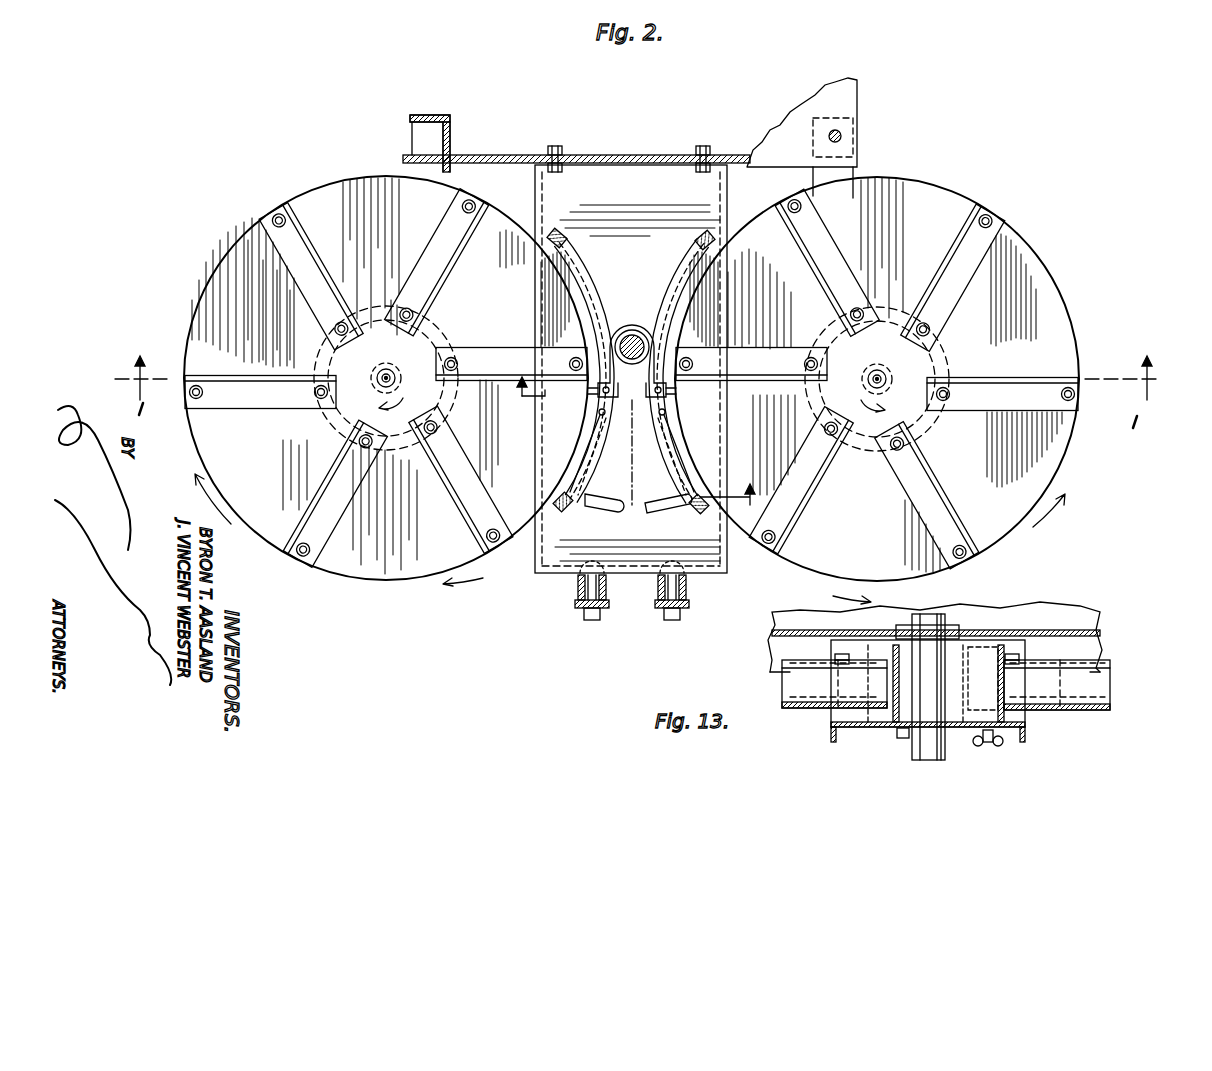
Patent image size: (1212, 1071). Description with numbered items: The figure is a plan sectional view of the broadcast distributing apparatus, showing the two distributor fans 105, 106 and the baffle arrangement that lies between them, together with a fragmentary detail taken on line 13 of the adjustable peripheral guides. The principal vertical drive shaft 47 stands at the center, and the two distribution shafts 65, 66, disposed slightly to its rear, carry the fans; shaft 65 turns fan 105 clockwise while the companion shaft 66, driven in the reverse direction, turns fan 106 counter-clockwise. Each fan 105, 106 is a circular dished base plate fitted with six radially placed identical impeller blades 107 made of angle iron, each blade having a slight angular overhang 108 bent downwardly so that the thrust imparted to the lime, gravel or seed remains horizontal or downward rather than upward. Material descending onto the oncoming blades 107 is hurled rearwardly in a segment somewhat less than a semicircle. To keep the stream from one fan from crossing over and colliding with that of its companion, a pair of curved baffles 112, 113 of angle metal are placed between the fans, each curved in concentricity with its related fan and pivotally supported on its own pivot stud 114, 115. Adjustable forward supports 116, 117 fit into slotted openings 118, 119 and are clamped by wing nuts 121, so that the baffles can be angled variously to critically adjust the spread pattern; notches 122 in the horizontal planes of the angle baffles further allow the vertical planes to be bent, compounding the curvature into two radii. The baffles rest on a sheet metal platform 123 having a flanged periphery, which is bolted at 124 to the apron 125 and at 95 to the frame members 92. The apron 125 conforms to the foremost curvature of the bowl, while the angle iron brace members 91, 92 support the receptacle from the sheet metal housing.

In FIG. 2, the section line 13— 13 is at (632, 452).
In FIG. 2, the principal vertical drive shaft 47 is at (634, 330).
In FIG. 13, the principal vertical drive shaft 47 is at (947, 753).
In FIG. 2, the distribution shaft 65 is at (384, 368).
In FIG. 2, the companion distribution shaft 66 is at (876, 369).
In FIG. 2, the angle iron brace member 91 is at (432, 117).
In FIG. 2, the angle iron brace member 92 is at (580, 604).
In FIG. 2, the bolt 95 is at (594, 622).
In FIG. 2, the distributor fan 105 is at (234, 252).
In FIG. 2, the distributor fan 106 is at (1038, 254).
In FIG. 2, the impeller blade 107 is at (326, 249).
In FIG. 13, the impeller blade 107 is at (790, 693).
In FIG. 13, the angular overhang 108 is at (790, 658).
In FIG. 2, the curved baffle 112 is at (596, 290).
In FIG. 2, the curved baffle 113 is at (684, 276).
In FIG. 2, the pivot stud 114 is at (581, 230).
In FIG. 2, the pivot stud 115 is at (699, 241).
In FIG. 2, the adjustable forward support 116 is at (590, 392).
In FIG. 2, the adjustable forward support 117 is at (560, 499).
In FIG. 2, the slotted opening 118 is at (611, 390).
In FIG. 2, the slotted opening 119 is at (608, 507).
In FIG. 13, the wing nut 121 is at (1003, 745).
In FIG. 2, the notch 122 is at (600, 413).
In FIG. 2, the sheet metal platform 123 is at (553, 566).
In FIG. 2, the bolt 124 is at (561, 152).
In FIG. 2, the apron 125 is at (497, 160).